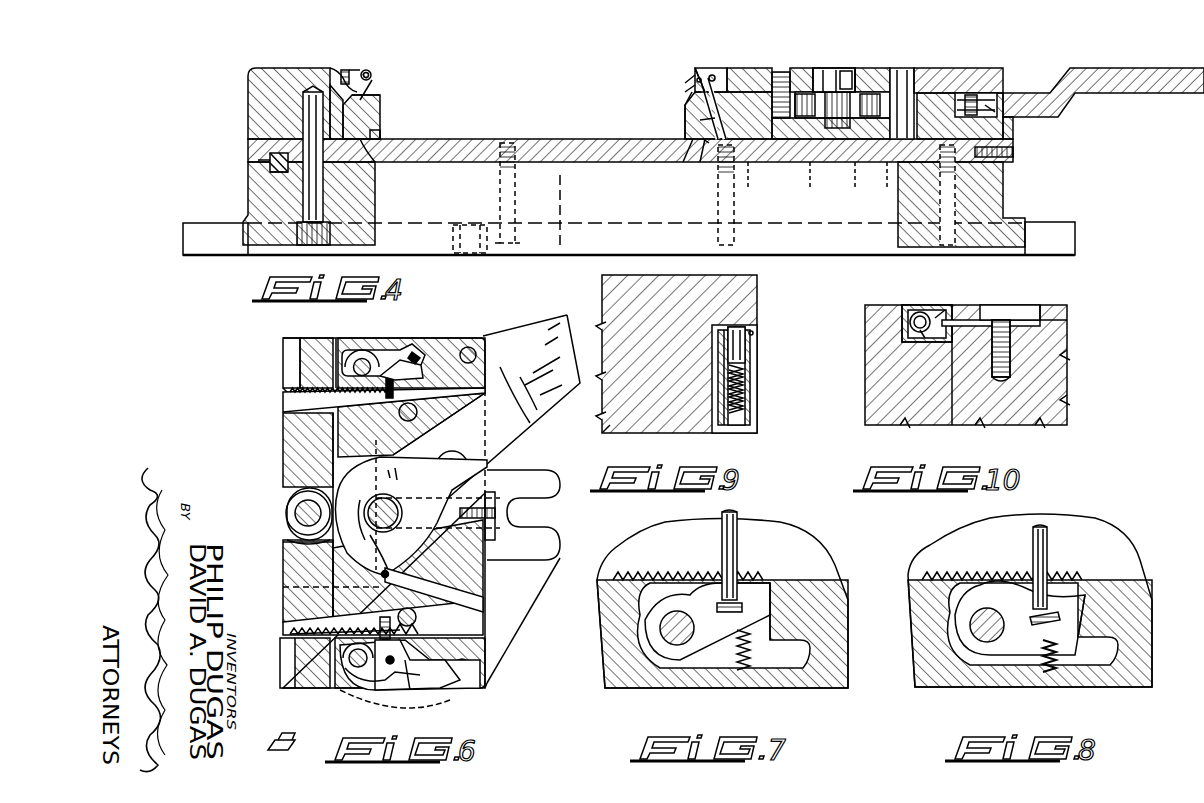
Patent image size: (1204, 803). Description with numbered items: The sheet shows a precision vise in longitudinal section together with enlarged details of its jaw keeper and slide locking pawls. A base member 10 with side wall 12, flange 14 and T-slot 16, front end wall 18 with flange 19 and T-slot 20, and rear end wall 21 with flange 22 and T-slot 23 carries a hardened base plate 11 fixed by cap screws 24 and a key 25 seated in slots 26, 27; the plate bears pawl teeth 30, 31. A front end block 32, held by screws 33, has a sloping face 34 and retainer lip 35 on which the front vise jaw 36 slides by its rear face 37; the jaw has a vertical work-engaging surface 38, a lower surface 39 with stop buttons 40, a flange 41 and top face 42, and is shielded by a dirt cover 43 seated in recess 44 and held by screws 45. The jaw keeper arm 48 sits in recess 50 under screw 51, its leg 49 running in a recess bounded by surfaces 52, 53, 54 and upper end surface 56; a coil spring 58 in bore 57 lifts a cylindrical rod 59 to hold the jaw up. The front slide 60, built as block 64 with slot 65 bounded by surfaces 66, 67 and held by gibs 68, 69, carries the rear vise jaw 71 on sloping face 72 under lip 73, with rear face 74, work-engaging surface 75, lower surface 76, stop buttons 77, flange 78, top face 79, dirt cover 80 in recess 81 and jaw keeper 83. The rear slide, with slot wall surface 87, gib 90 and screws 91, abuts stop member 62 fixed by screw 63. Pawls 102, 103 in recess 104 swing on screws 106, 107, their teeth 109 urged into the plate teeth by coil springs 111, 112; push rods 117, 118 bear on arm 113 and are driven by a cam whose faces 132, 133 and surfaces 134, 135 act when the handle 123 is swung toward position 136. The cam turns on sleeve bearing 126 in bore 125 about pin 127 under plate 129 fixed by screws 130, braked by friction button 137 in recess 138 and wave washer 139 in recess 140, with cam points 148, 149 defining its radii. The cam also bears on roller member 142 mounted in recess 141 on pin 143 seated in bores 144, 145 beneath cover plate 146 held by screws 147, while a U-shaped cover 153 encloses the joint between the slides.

In FIG. 4, the base member 10 is at (580, 258).
In FIG. 6, the base member 10 is at (517, 640).
In FIG. 4, the base plate 11 is at (541, 139).
In FIG. 6, the base plate 11 is at (300, 405).
In FIG. 7, the base plate 11 is at (805, 542).
In FIG. 8, the base plate 11 is at (1118, 545).
In FIG. 4, the side wall 12 is at (648, 200).
In FIG. 4, the horizontal flange 14 is at (577, 228).
In FIG. 4, the T-slot 16 is at (482, 250).
In FIG. 4, the front end wall 18 is at (260, 197).
In FIG. 4, the horizontal flange 19 is at (200, 228).
In FIG. 4, the T-slot 20 is at (185, 238).
In FIG. 4, the rear end wall 21 is at (1000, 195).
In FIG. 4, the horizontal flange 22 is at (1062, 222).
In FIG. 6, the horizontal flange 22 is at (535, 590).
In FIG. 4, the T-slot 23 is at (1075, 235).
In FIG. 6, the T-slot 23 is at (562, 508).
In FIG. 4, the socket head cap screws 24 is at (516, 188).
In FIG. 4, the key 25 is at (268, 163).
In FIG. 4, the slot 26 is at (268, 158).
In FIG. 4, the slot 27 is at (276, 170).
In FIG. 6, the pawl teeth 30 is at (292, 634).
In FIG. 7, the pawl teeth 30 is at (618, 570).
In FIG. 8, the pawl teeth 30 is at (928, 562).
In FIG. 6, the pawl teeth 31 is at (283, 390).
In FIG. 4, the front end block 32 is at (249, 82).
In FIG. 4, the socket head screws 33 is at (310, 232).
In FIG. 4, the sloping front face 34 is at (381, 108).
In FIG. 4, the retainer lip 35 is at (375, 73).
In FIG. 4, the front vise jaw 36 is at (390, 131).
In FIG. 9, the front vise jaw 36 is at (610, 435).
In FIG. 4, the rear face 37 is at (341, 74).
In FIG. 4, the work-engaging surface 38 is at (380, 120).
In FIG. 4, the lower surface 39 is at (365, 162).
In FIG. 4, the stop buttons 40 is at (375, 160).
In FIG. 4, the flange 41 is at (375, 82).
In FIG. 4, the top face 42 is at (380, 94).
In FIG. 9, the top face 42 is at (740, 275).
In FIG. 4, the dirt cover 43 is at (377, 66).
In FIG. 4, the recess 44 is at (346, 70).
In FIG. 4, the flat-head screws 45 is at (358, 65).
In FIG. 10, the arm 48 is at (970, 318).
In FIG. 9, the jaw retaining and guiding leg 49 is at (748, 350).
In FIG. 10, the jaw retaining and guiding leg 49 is at (935, 315).
In FIG. 10, the recess 50 is at (1035, 306).
In FIG. 10, the flat-headed screw 51 is at (1012, 305).
In FIG. 9, the wall surface 52 is at (750, 430).
In FIG. 10, the wall surface 52 is at (912, 305).
In FIG. 9, the wall surface 53 is at (720, 362).
In FIG. 10, the wall surface 53 is at (925, 340).
In FIG. 10, the recess surface 54 is at (992, 356).
In FIG. 9, the upper end surface 56 is at (755, 333).
In FIG. 9, the bore 57 is at (748, 375).
In FIG. 10, the bore 57 is at (910, 338).
In FIG. 9, the coil spring 58 is at (748, 395).
In FIG. 10, the coil spring 58 is at (925, 312).
In FIG. 9, the cylindrical rod 59 is at (728, 340).
In FIG. 6, the front slide 60 is at (275, 470).
In FIG. 4, the stop member 62 is at (1014, 129).
In FIG. 6, the stop member 62 is at (492, 488).
In FIG. 4, the flat-headed screw 63 is at (1014, 153).
In FIG. 6, the flat-headed screw 63 is at (470, 520).
In FIG. 4, the front slide block 64 is at (772, 158).
In FIG. 6, the front slide block 64 is at (315, 338).
In FIG. 10, the front slide block 64 is at (1060, 330).
In FIG. 4, the slot 65 is at (728, 108).
In FIG. 6, the slot wall surface 66 is at (312, 663).
In FIG. 6, the slot wall surface 67 is at (323, 363).
In FIG. 6, the gib 68 is at (280, 680).
In FIG. 4, the gib 69 is at (748, 180).
In FIG. 6, the gib 69 is at (288, 338).
In FIG. 4, the rear vise jaw 71 is at (678, 122).
In FIG. 10, the rear vise jaw 71 is at (858, 333).
In FIG. 4, the sloping front face 72 is at (685, 108).
In FIG. 4, the retainer lip 73 is at (697, 60).
In FIG. 4, the rear face 74 is at (705, 120).
In FIG. 4, the work-engaging surface 75 is at (690, 145).
In FIG. 4, the lower surface 76 is at (702, 145).
In FIG. 4, the stop buttons 77 is at (707, 145).
In FIG. 4, the flange 78 is at (692, 82).
In FIG. 4, the top face 79 is at (688, 90).
In FIG. 4, the dirt cover 80 is at (704, 66).
In FIG. 4, the recess 81 is at (722, 68).
In FIG. 10, the jaw keeper 83 is at (950, 310).
In FIG. 7, the slot wall surface 87 is at (825, 575).
In FIG. 8, the slot wall surface 87 is at (1130, 575).
In FIG. 4, the gib 90 is at (887, 190).
In FIG. 6, the flat-headed screws 91 is at (477, 340).
In FIG. 6, the pawl 102 is at (420, 695).
In FIG. 7, the pawl 102 is at (762, 620).
In FIG. 8, the pawl 102 is at (1070, 625).
In FIG. 6, the pawl 103 is at (395, 360).
In FIG. 7, the recess 104 is at (702, 685).
In FIG. 8, the recess 104 is at (1008, 672).
In FIG. 6, the round-head socket screw 106 is at (362, 670).
In FIG. 7, the round-head socket screw 106 is at (668, 640).
In FIG. 8, the round-head socket screw 106 is at (978, 640).
In FIG. 6, the round-head socket screw 107 is at (362, 358).
In FIG. 7, the teeth 109 is at (768, 575).
In FIG. 8, the teeth 109 is at (1076, 580).
In FIG. 6, the coil spring 111 is at (408, 695).
In FIG. 7, the coil spring 111 is at (752, 653).
In FIG. 8, the coil spring 111 is at (1065, 665).
In FIG. 6, the coil spring 112 is at (420, 352).
In FIG. 7, the arm 113 is at (722, 612).
In FIG. 8, the arm 113 is at (1035, 623).
In FIG. 6, the pawl actuating push rod 117 is at (378, 628).
In FIG. 7, the pawl actuating push rod 117 is at (740, 520).
In FIG. 8, the pawl actuating push rod 117 is at (1050, 528).
In FIG. 6, the pawl actuating push rod 118 is at (380, 402).
In FIG. 4, the handle 123 is at (1112, 72).
In FIG. 6, the central bore 125 is at (366, 508).
In FIG. 6, the sleeve bearing 126 is at (402, 512).
In FIG. 4, the pin 127 is at (905, 68).
In FIG. 6, the pin 127 is at (390, 508).
In FIG. 4, the plate 129 is at (948, 70).
In FIG. 6, the round-head socket screws 130 is at (418, 412).
In FIG. 6, the cam face 132 is at (391, 513).
In FIG. 6, the cam face 133 is at (390, 565).
In FIG. 6, the cam surface 134 is at (392, 575).
In FIG. 6, the cam surface 135 is at (395, 460).
In FIG. 6, the dotted line position 136 is at (550, 335).
In FIG. 4, the friction button 137 is at (972, 92).
In FIG. 6, the friction button 137 is at (458, 450).
In FIG. 4, the circular recess 138 is at (990, 95).
In FIG. 4, the wave washer 139 is at (997, 110).
In FIG. 4, the circular recess 140 is at (960, 116).
In FIG. 4, the recess 141 is at (820, 92).
In FIG. 6, the recess 141 is at (290, 500).
In FIG. 4, the roller member 142 is at (832, 70).
In FIG. 6, the roller member 142 is at (290, 508).
In FIG. 4, the pin 143 is at (830, 118).
In FIG. 6, the pin 143 is at (292, 522).
In FIG. 4, the bore 144 is at (818, 128).
In FIG. 4, the bore 145 is at (857, 68).
In FIG. 4, the cover plate 146 is at (773, 70).
In FIG. 4, the flat-headed screws 147 is at (783, 72).
In FIG. 6, the end point 148 is at (360, 530).
In FIG. 6, the initial point 149 is at (290, 548).
In FIG. 4, the U-shaped cover 153 is at (862, 70).